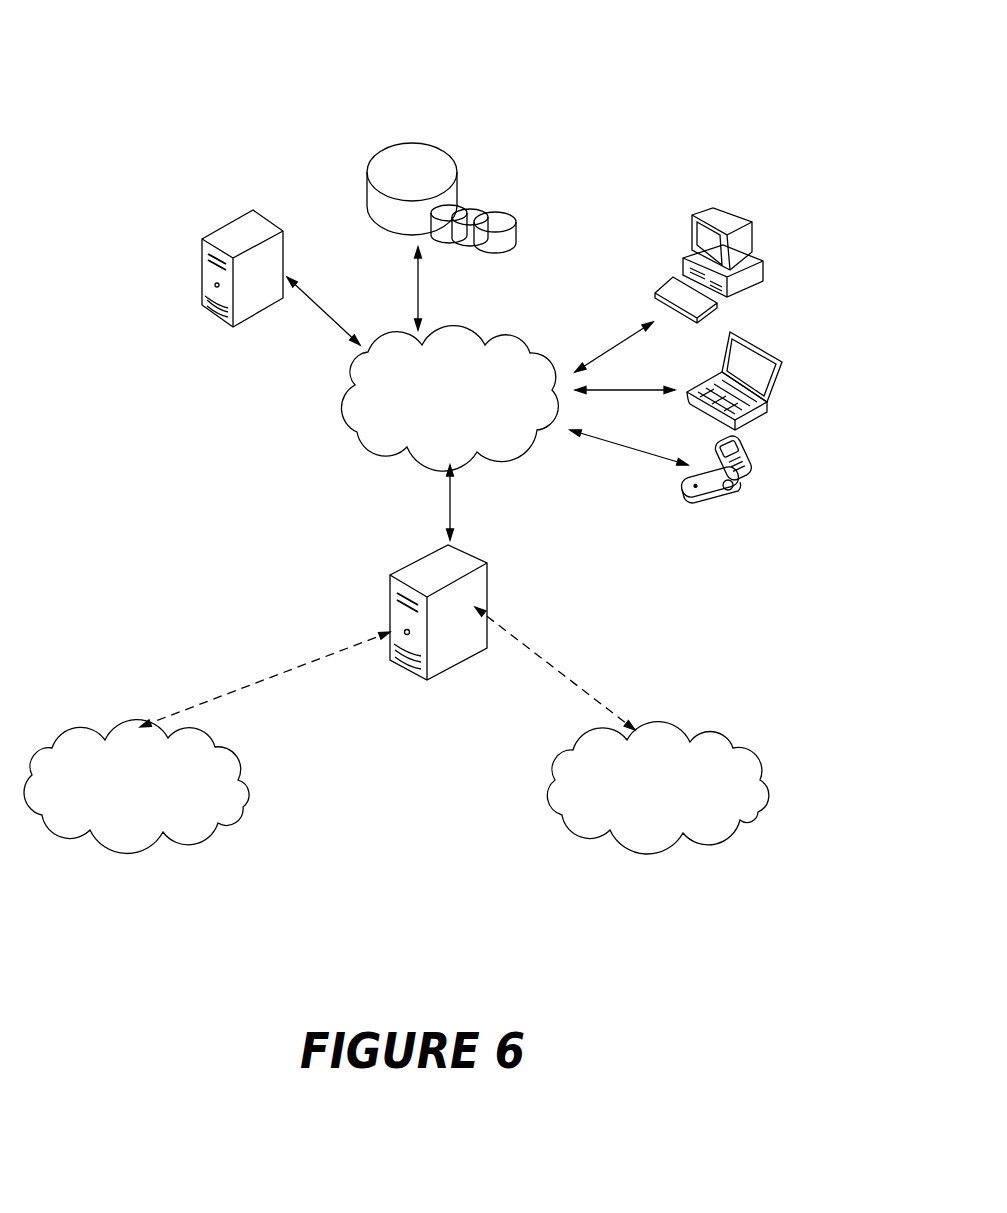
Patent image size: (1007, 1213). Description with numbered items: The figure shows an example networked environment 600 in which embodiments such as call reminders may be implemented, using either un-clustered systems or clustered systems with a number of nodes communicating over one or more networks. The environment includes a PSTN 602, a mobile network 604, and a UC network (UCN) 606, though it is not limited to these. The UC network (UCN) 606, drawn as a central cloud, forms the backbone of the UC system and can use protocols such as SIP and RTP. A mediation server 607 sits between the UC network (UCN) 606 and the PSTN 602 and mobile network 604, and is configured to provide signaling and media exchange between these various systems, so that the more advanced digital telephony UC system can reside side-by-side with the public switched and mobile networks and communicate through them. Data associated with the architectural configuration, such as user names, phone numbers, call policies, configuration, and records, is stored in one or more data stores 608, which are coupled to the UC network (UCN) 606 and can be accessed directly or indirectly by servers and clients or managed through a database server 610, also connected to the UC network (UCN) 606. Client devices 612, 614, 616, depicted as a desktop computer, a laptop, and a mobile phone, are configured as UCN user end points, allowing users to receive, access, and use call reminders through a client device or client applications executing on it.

The networked environment 600 is at (255, 45).
The PSTN 602 is at (562, 762).
The mobile network 604 is at (87, 745).
The UC network (UCN) 606 is at (345, 393).
The mediation server 607 is at (415, 562).
The data stores 608 is at (421, 155).
The database server 610 is at (235, 222).
The client device 612 is at (702, 213).
The client device 614 is at (742, 335).
The client device 616 is at (748, 465).